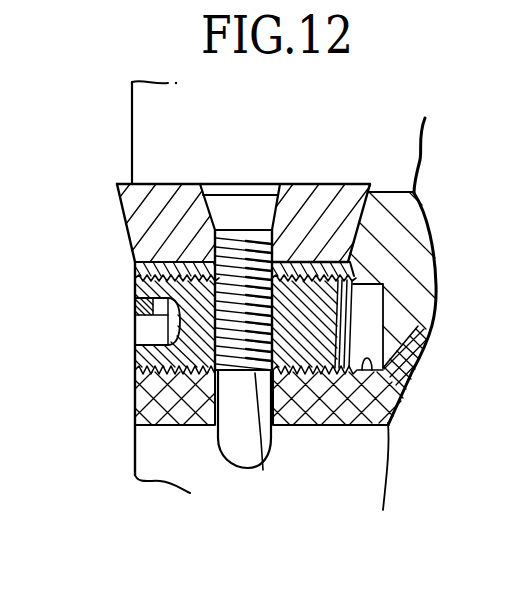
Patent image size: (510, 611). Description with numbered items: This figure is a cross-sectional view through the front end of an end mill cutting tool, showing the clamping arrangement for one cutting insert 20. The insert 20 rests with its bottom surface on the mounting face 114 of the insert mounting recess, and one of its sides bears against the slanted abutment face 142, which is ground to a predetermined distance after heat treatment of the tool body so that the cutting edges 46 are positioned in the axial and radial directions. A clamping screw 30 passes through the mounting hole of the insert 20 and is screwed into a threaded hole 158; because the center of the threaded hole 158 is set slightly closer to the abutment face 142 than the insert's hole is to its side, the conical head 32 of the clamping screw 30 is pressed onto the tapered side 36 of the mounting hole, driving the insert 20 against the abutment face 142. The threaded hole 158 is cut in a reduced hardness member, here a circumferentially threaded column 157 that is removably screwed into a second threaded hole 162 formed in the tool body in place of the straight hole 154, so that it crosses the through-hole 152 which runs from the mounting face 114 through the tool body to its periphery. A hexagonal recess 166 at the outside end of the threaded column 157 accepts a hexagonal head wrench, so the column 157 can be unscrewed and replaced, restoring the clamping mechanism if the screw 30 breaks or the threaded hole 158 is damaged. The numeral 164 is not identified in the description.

The insert 20 is at (314, 205).
The clamping screw 30 is at (227, 225).
The conical head 32 is at (261, 207).
The tapered side 36 is at (216, 228).
The cutting edges 46 is at (117, 184).
The mounting face 114 is at (150, 226).
The abutment face 142 is at (358, 217).
The through-hole 152 is at (222, 406).
The straight hole 154 is at (370, 358).
The threaded column 157 is at (137, 361).
The threaded hole 158 is at (263, 470).
The second threaded hole 162 is at (304, 375).
The lower plate portion 164 is at (145, 402).
The hexagonal recess 166 is at (153, 315).